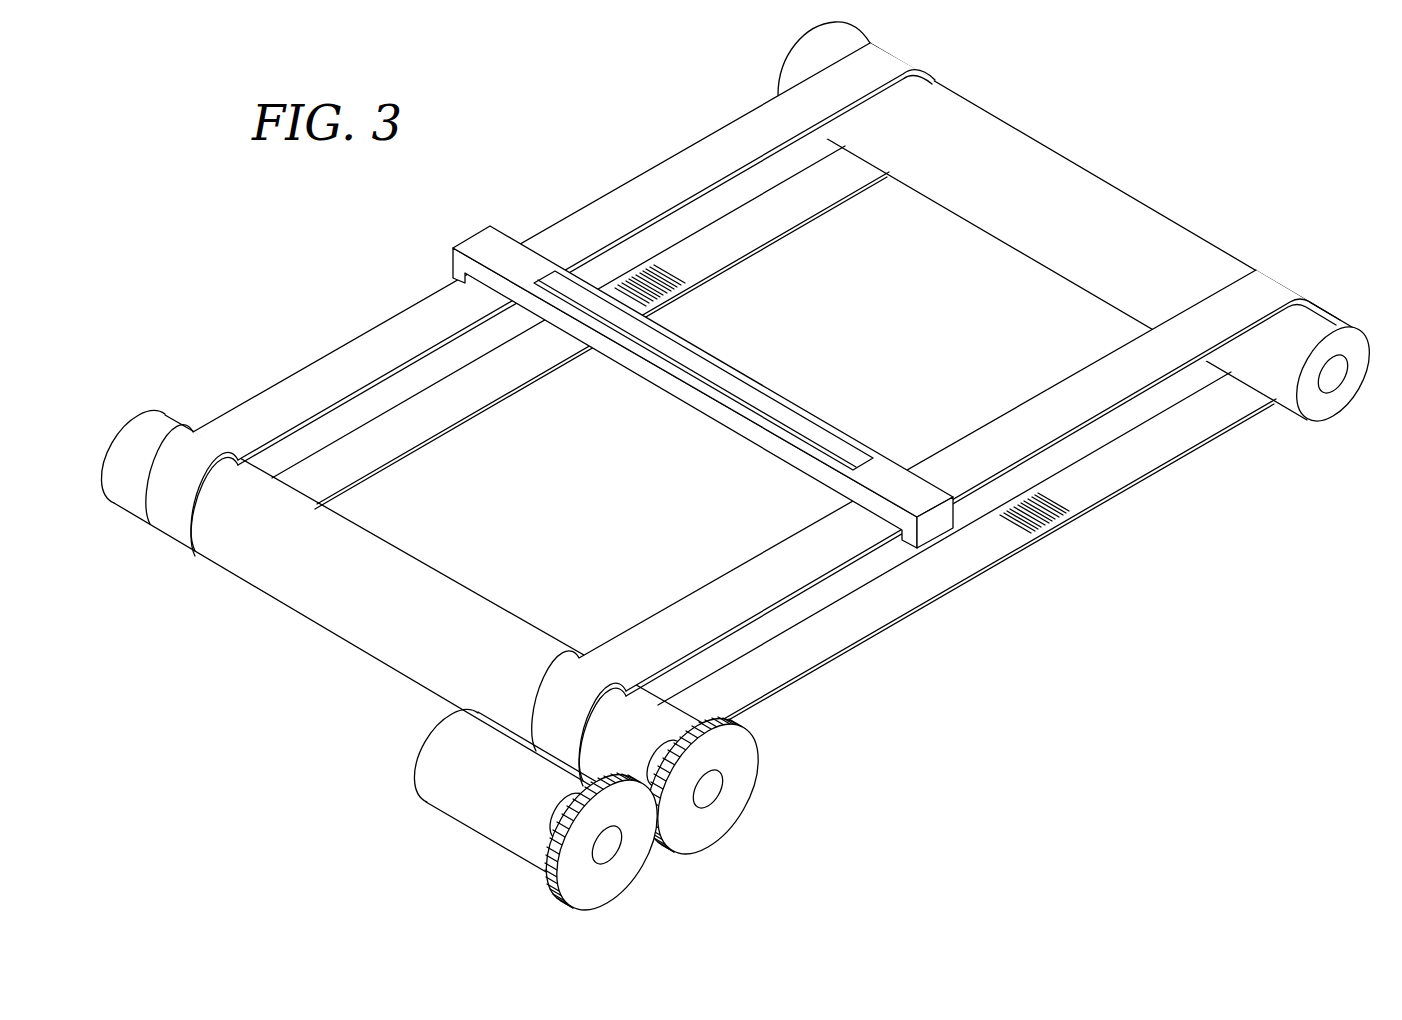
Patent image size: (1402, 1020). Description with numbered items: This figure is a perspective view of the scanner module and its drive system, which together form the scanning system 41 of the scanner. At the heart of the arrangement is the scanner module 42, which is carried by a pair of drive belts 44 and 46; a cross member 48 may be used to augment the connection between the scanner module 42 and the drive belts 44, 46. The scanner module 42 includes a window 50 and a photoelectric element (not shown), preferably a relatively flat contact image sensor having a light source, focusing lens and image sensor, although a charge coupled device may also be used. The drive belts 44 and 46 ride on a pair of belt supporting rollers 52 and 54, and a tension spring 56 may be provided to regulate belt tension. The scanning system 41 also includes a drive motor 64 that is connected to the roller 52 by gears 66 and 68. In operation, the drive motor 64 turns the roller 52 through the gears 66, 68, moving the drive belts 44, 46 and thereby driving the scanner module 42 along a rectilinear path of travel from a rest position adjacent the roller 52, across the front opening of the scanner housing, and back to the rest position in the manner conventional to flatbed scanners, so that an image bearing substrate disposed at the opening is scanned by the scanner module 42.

The scanning system 41 is at (1162, 136).
The scanner module 42 is at (703, 387).
The drive belt 44 is at (669, 186).
The drive belt 46 is at (1148, 458).
The cross member 48 is at (741, 437).
The window 50 is at (703, 387).
The belt supporting roller 52 is at (330, 603).
The belt supporting roller 54 is at (1157, 228).
The tension spring 56 is at (670, 300).
The drive motor 64 is at (440, 778).
The gear 66 is at (633, 853).
The gear 68 is at (743, 785).